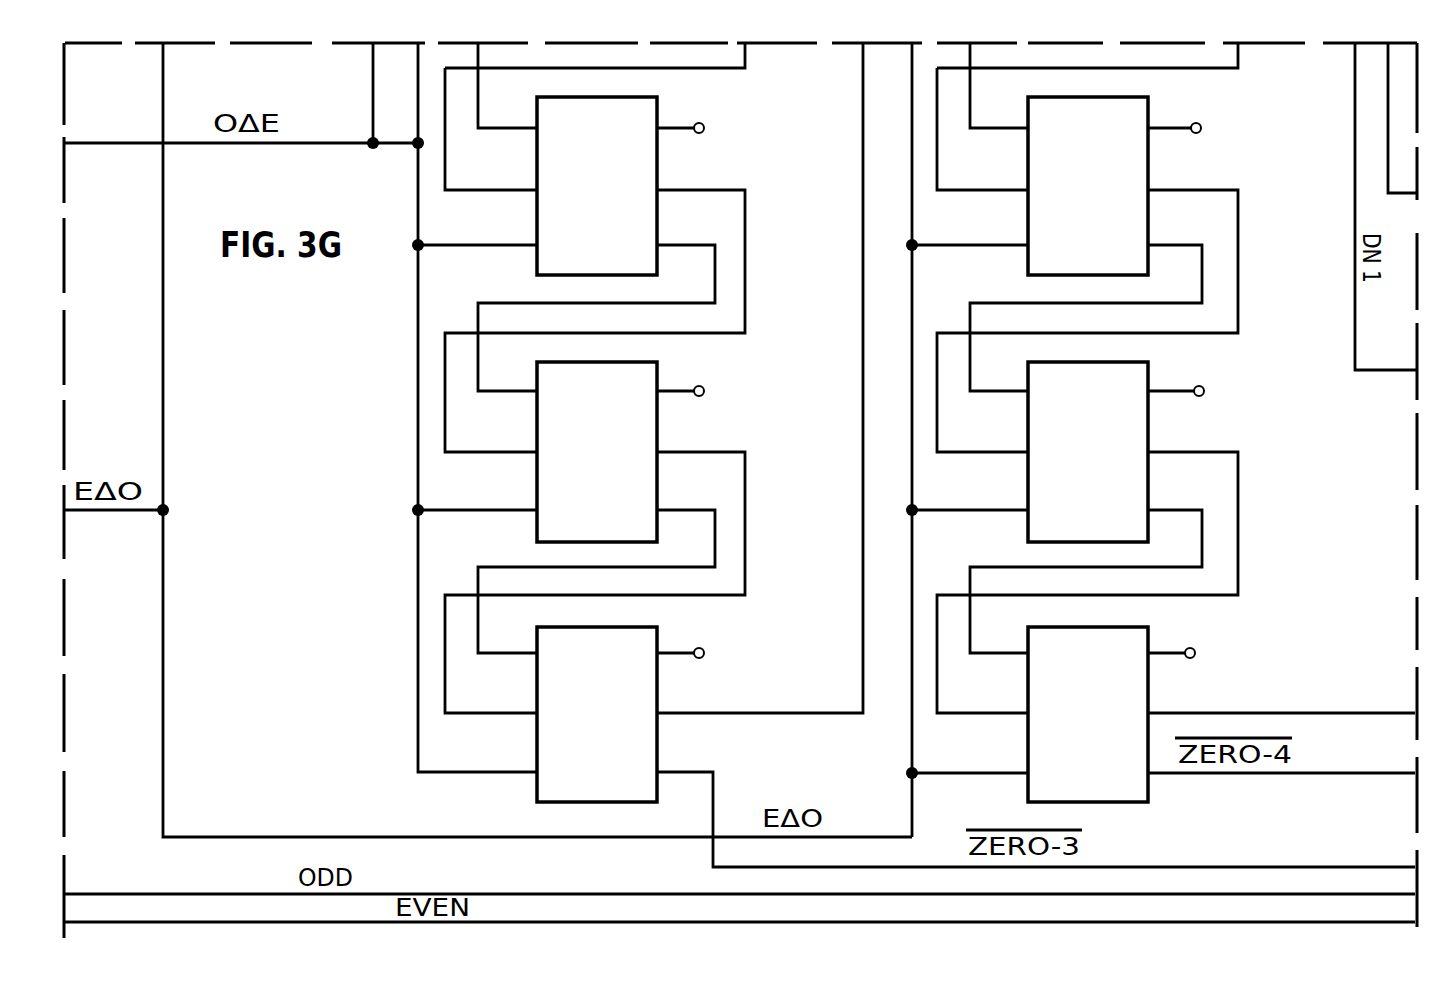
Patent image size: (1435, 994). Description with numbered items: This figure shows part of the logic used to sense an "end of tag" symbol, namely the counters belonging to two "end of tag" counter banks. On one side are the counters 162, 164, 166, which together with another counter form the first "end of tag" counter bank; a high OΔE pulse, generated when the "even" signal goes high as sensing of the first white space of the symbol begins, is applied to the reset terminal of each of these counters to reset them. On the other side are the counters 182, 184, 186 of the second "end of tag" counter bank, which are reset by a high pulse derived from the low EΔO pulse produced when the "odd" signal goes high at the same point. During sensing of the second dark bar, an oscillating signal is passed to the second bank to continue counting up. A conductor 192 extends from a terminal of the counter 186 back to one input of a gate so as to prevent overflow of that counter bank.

The counter 162 is at (657, 111).
The counter 164 is at (657, 376).
The counter 166 is at (657, 640).
The counter 182 is at (1148, 111).
The counter 184 is at (1148, 376).
The counter 186 is at (1148, 640).
The conductor 192 is at (1380, 712).